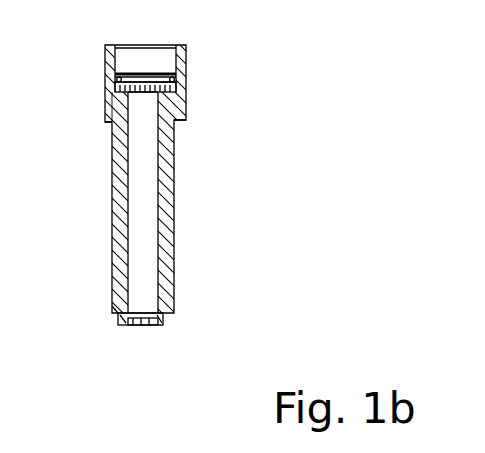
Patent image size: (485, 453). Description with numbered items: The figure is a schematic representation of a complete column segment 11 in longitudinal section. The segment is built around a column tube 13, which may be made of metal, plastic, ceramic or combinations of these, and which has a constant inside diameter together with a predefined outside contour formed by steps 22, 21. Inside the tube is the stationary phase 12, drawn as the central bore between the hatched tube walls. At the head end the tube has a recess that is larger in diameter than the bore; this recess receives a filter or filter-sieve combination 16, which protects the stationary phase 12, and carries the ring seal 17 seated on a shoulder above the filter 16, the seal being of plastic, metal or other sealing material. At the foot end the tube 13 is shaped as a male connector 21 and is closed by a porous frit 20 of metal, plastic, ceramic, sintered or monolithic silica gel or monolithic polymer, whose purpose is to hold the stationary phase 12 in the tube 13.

The column segment 11 is at (193, 72).
The stationary phase 12 is at (143, 212).
The column tube 13 is at (174, 156).
The filter or filter-sieve combination 16 is at (111, 98).
The ring seal 17 is at (113, 76).
The porous frit 20 is at (150, 326).
The male connector step 21 is at (114, 315).
The step of outside contour 22 is at (110, 123).